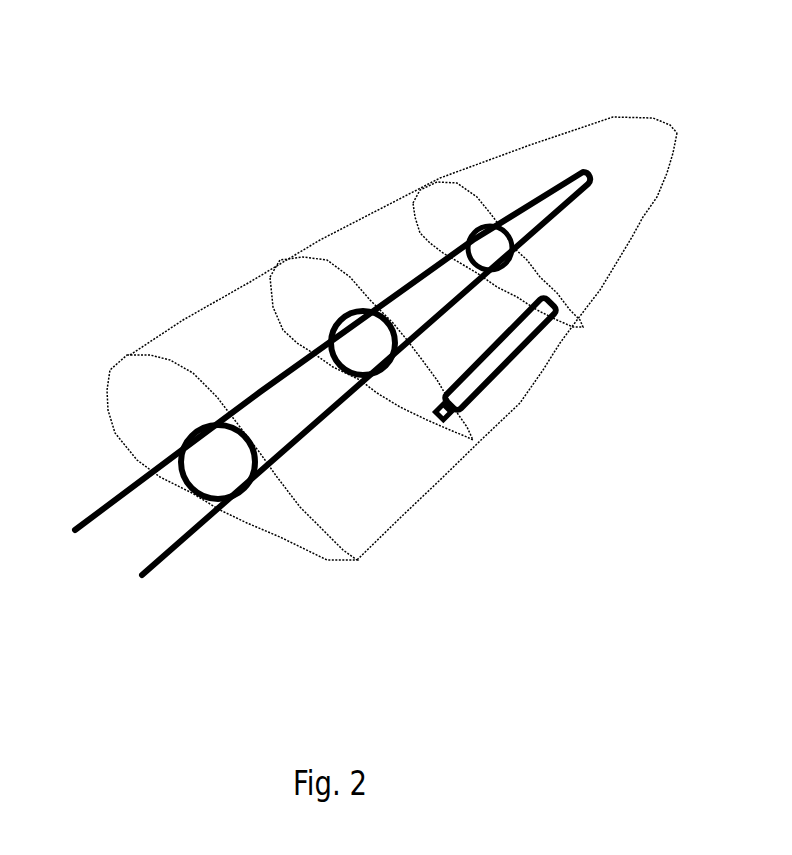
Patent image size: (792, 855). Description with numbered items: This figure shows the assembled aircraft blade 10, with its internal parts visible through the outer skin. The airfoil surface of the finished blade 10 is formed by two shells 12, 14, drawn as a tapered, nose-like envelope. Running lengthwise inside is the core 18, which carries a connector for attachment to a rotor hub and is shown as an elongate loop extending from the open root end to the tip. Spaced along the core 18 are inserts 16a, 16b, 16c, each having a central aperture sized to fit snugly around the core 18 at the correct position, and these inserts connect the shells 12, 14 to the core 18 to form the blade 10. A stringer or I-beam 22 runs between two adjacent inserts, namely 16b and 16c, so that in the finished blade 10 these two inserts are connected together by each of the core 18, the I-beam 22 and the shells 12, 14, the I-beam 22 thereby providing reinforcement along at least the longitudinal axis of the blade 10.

The aircraft blade 10 is at (275, 88).
The shell 12 is at (227, 312).
The shell 14 is at (105, 418).
The insert 16a is at (532, 263).
The insert 16b is at (408, 395).
The insert 16c is at (297, 517).
The core 18 is at (544, 205).
The stringer or I-beam 22 is at (500, 347).